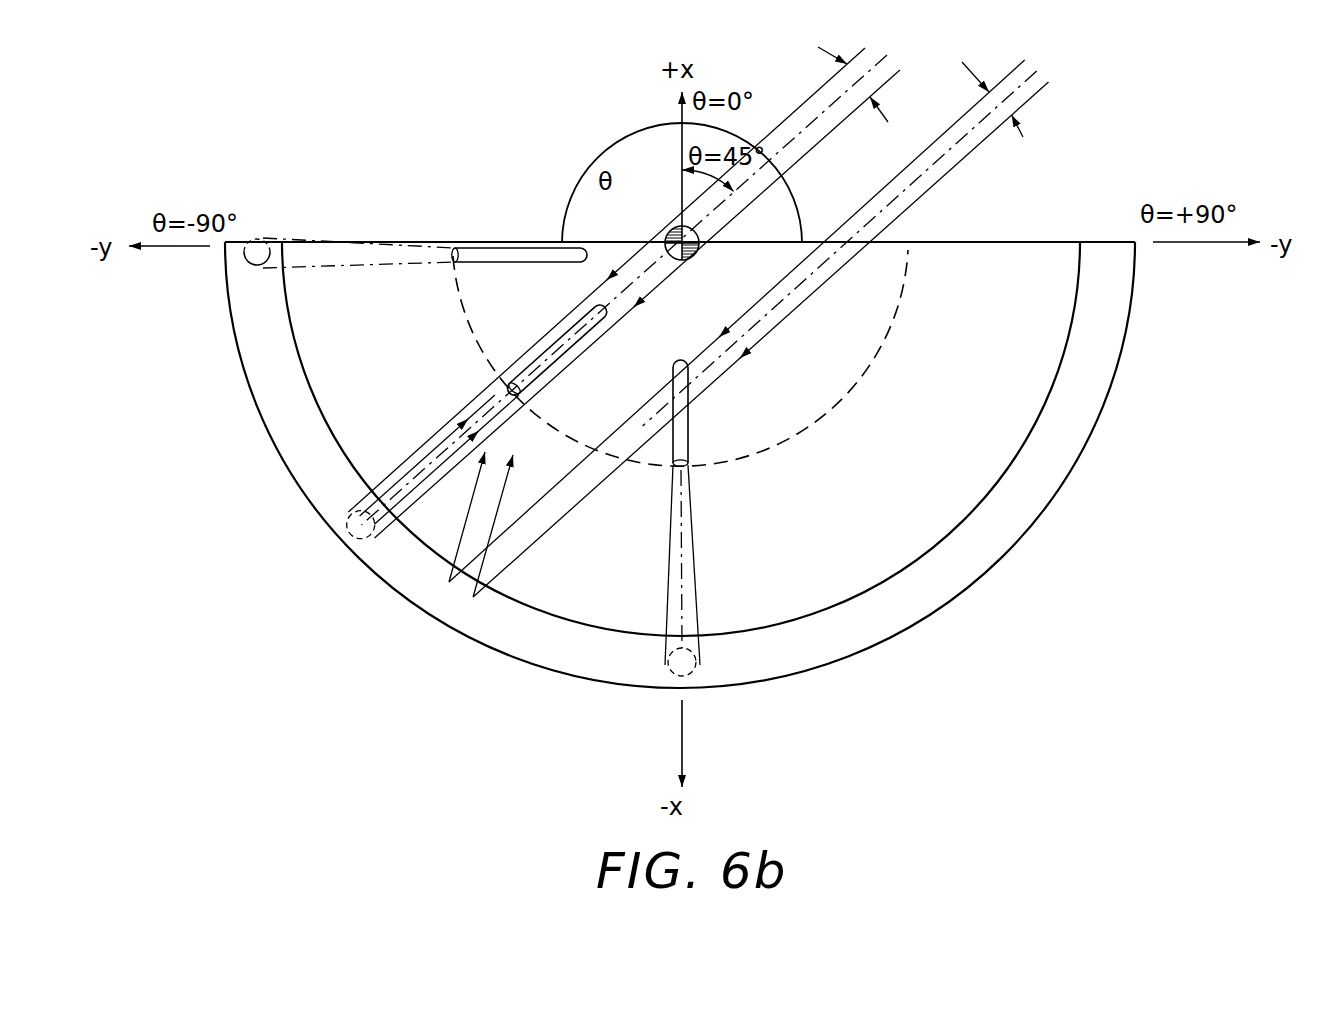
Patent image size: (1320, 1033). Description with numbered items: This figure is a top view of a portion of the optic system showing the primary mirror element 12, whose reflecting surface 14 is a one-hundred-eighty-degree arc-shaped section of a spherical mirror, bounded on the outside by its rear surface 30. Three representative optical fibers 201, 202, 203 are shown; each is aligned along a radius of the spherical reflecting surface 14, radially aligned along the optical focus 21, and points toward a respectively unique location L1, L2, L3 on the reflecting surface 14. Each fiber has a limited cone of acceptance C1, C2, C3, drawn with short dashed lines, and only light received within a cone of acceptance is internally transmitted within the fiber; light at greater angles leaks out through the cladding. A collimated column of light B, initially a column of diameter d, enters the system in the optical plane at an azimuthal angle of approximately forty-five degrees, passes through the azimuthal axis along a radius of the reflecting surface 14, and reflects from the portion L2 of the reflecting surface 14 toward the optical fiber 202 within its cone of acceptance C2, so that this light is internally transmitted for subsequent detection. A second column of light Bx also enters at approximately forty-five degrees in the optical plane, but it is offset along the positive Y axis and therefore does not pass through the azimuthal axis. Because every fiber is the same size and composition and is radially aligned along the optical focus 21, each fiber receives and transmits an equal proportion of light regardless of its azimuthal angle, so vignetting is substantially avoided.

The primary mirror element 12 is at (1010, 522).
The reflecting surface 14 is at (776, 640).
The optical focus 21 is at (866, 380).
The rear surface 30 is at (954, 607).
The column of light B is at (782, 162).
The second column of light Bx is at (952, 162).
The diameter d is at (911, 85).
The optical fiber 201 is at (684, 420).
The optical fiber 202 is at (552, 360).
The optical fiber 203 is at (510, 254).
The location along reflecting surface L1 is at (689, 663).
The portion of reflecting surface L2 is at (357, 524).
The location along reflecting surface L3 is at (253, 250).
The cone of acceptance C1 is at (684, 540).
The cone of acceptance C2 is at (400, 487).
The cone of acceptance C3 is at (336, 243).